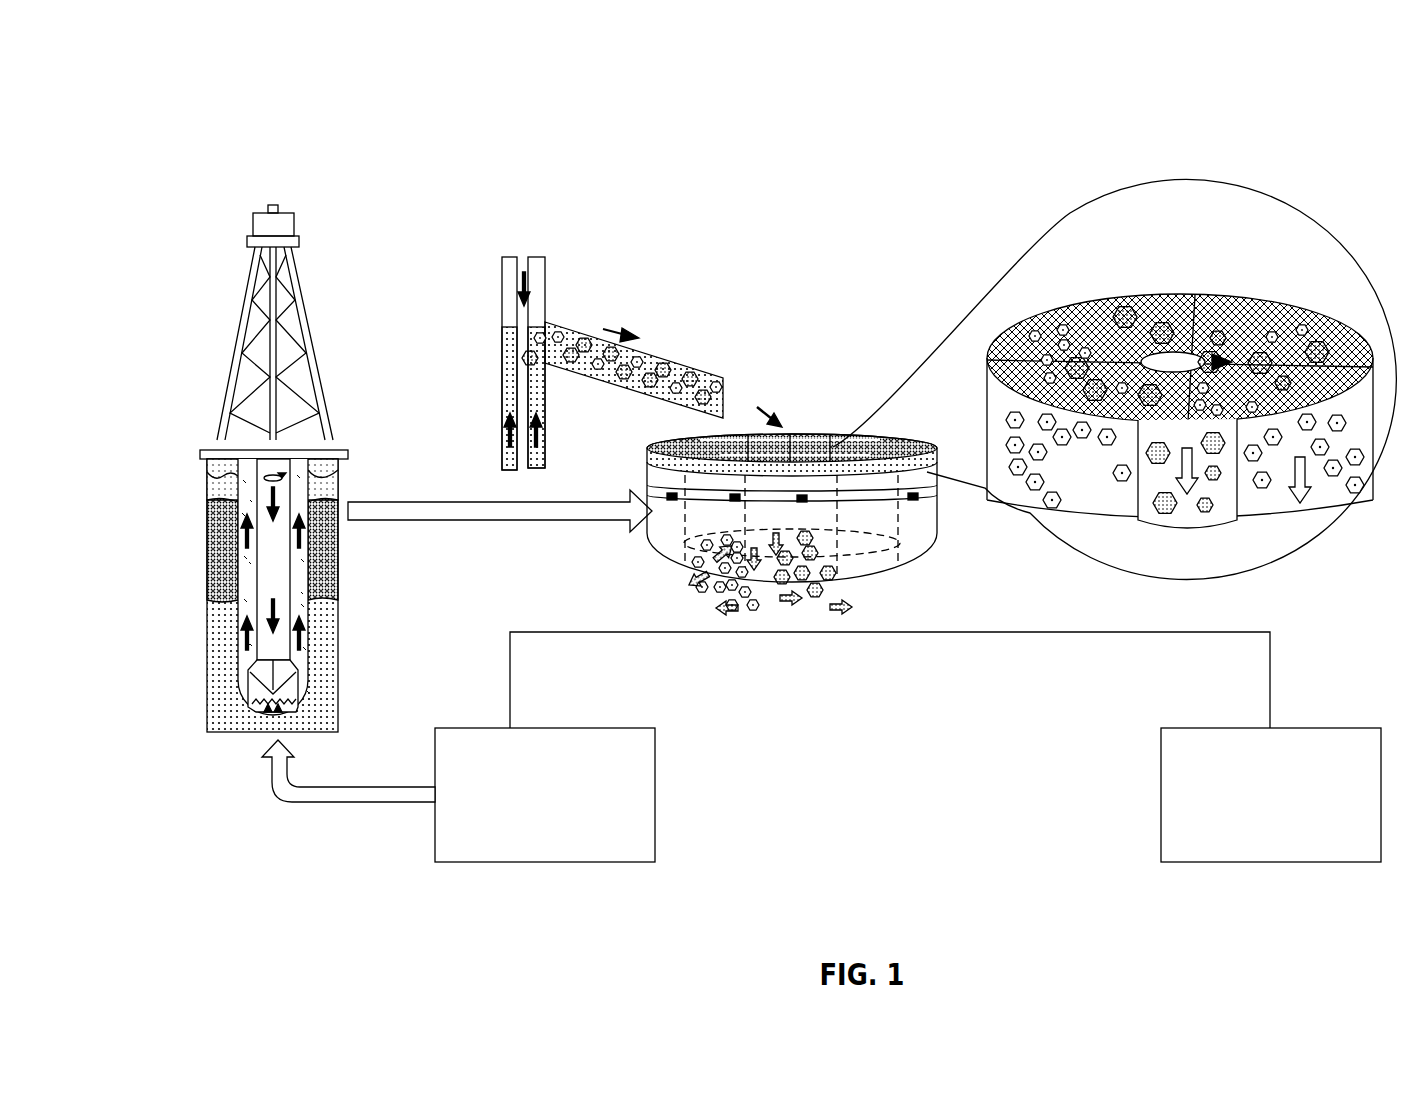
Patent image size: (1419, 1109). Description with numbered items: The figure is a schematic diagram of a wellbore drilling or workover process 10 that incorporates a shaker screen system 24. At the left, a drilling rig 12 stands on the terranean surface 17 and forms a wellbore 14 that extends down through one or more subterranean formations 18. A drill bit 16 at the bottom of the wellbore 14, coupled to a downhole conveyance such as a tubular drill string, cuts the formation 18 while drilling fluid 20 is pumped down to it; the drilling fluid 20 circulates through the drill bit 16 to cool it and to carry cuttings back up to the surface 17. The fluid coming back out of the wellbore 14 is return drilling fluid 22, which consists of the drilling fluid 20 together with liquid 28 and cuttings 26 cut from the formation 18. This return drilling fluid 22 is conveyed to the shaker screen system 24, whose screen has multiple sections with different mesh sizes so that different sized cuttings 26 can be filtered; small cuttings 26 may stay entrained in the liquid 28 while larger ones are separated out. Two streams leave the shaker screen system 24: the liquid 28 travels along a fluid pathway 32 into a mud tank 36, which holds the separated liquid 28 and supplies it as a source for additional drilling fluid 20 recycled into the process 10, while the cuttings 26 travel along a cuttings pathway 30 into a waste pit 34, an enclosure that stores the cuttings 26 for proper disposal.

The wellbore drilling or workover process 10 is at (1296, 100).
The drilling rig 12 is at (279, 190).
The wellbore 14 is at (311, 628).
The drill bit 16 is at (291, 688).
The terranean surface 17 is at (196, 457).
The subterranean formation 18 is at (216, 669).
The drilling fluid 20 is at (277, 496).
The return drilling fluid 22 is at (312, 542).
The shaker screen system 24 is at (828, 426).
The cuttings 26 is at (838, 618).
The liquid 28 is at (714, 618).
The cuttings pathway 30 is at (1015, 634).
The fluid pathway 32 is at (588, 634).
The waste pit 34 is at (1219, 727).
The mud tank 36 is at (506, 727).